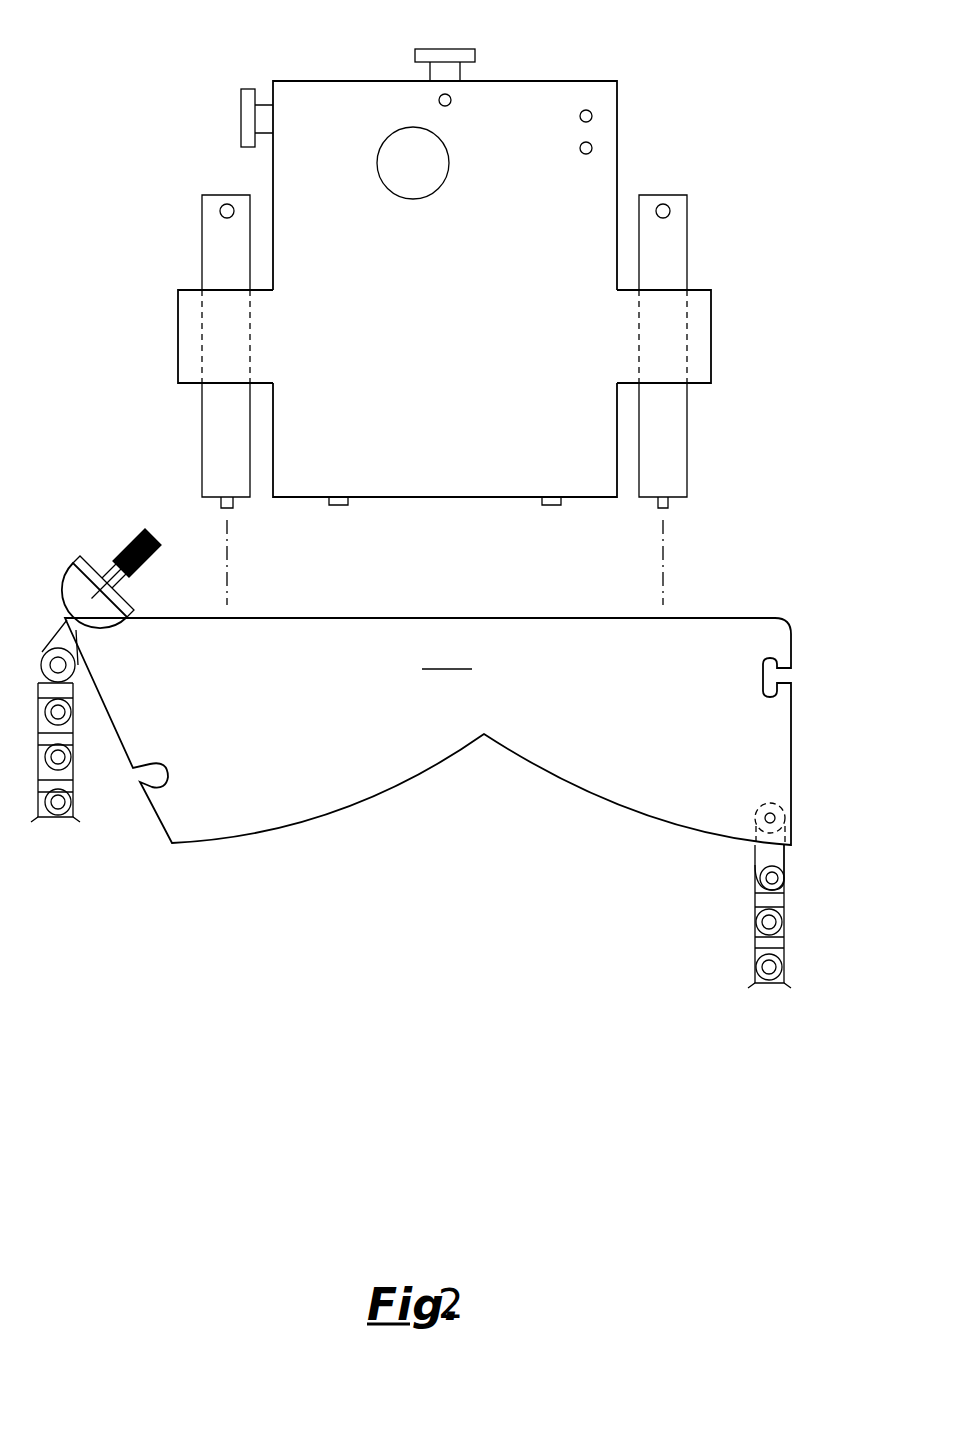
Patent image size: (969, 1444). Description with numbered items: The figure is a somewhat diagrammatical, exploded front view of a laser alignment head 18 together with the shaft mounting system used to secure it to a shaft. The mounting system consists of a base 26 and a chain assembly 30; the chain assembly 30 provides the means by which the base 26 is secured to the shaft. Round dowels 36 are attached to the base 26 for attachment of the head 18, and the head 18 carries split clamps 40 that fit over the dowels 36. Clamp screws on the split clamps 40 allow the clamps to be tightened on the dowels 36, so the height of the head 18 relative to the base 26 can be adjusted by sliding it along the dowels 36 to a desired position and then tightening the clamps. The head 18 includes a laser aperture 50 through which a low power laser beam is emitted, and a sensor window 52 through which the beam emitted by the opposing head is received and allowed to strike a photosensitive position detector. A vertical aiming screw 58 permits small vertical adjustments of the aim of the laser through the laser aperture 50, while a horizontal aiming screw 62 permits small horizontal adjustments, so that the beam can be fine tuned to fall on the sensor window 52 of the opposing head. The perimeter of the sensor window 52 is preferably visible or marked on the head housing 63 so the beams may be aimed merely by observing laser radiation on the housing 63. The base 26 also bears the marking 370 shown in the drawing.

The laser alignment head 18 is at (454, 302).
The base 26 is at (459, 731).
The chain assembly 30 is at (784, 880).
The round dowel 36 is at (210, 194).
The split clamp 40 is at (178, 322).
The laser aperture 50 is at (450, 103).
The sensor window 52 is at (448, 175).
The vertical aiming screw 58 is at (453, 49).
The horizontal aiming screw 62 is at (242, 107).
The head housing 63 is at (332, 80).
The plate marking 370 is at (446, 655).